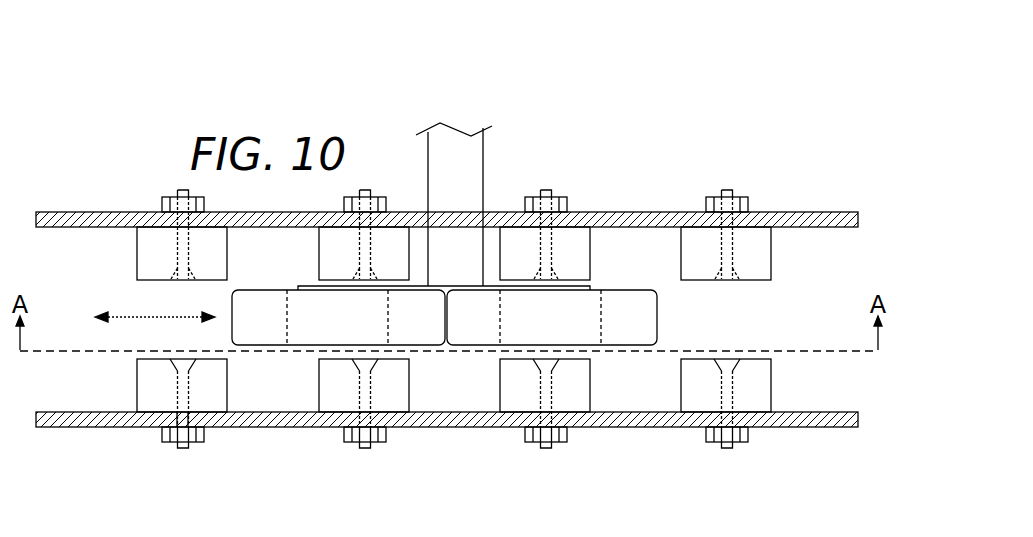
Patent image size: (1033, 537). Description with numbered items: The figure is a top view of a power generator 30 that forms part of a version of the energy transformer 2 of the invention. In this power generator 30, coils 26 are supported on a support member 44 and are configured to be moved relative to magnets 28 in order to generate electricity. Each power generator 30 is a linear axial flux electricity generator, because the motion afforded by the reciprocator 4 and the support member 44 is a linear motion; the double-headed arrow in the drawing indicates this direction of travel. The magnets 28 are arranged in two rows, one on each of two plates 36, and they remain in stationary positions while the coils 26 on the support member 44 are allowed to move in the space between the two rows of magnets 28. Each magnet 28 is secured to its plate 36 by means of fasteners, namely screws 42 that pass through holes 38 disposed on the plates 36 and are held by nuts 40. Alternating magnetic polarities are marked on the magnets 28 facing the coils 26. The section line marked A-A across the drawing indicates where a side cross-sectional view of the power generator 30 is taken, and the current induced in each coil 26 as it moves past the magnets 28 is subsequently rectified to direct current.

The energy transformer 2 is at (590, 82).
The reciprocator 4 is at (516, 133).
The coil 26 is at (245, 329).
The magnet 28 is at (470, 319).
The power generator 30 is at (676, 138).
The plate 36 is at (786, 212).
The hole 38 is at (192, 415).
The nut 40 is at (716, 197).
The screw 42 is at (728, 191).
The support member 44 is at (442, 168).